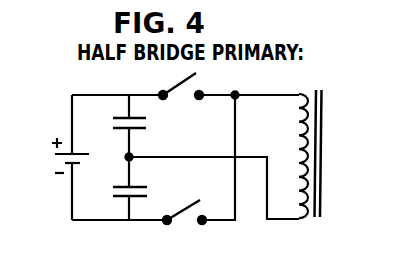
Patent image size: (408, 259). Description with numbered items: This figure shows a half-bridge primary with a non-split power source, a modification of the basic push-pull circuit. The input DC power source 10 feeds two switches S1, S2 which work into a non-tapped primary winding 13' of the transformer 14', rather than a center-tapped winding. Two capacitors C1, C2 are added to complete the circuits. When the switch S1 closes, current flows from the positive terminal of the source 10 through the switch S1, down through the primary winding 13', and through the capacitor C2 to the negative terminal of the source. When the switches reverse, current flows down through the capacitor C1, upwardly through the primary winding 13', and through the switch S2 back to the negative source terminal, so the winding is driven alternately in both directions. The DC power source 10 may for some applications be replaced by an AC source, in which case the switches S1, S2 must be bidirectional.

The input DC power source 10 is at (57, 171).
The non-tapped primary winding 13' is at (283, 156).
The transformer 14' is at (337, 124).
The capacitor C1 is at (117, 126).
The capacitor C2 is at (118, 191).
The switch S1 is at (181, 97).
The switch S2 is at (185, 199).